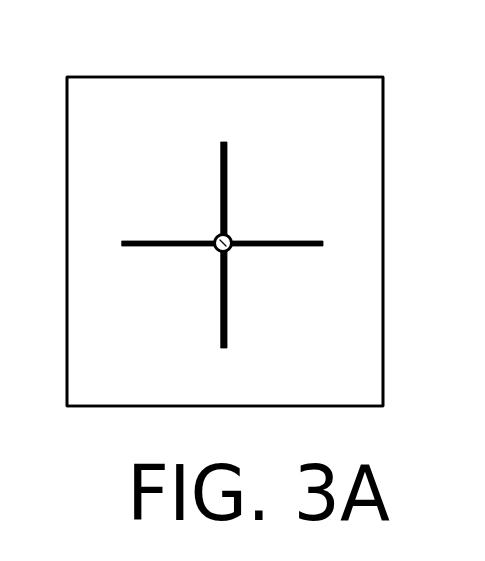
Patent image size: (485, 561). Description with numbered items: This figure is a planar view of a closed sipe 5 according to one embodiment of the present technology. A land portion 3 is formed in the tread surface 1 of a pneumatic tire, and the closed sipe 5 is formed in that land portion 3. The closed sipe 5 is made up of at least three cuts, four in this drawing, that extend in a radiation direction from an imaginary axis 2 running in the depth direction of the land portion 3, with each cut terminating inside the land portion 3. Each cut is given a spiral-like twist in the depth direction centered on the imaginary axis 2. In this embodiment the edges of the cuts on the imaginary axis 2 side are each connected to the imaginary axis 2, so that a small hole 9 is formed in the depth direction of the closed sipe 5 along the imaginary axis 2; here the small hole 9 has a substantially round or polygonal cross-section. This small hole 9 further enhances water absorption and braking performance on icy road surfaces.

The tread surface 1 is at (366, 60).
The imaginary axis 2 is at (216, 236).
The land portion 3 is at (336, 390).
The closed sipe 5 is at (151, 154).
The small hole 9 is at (211, 262).